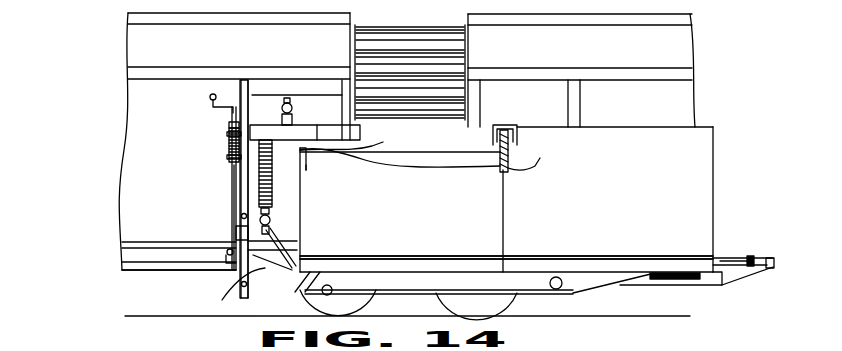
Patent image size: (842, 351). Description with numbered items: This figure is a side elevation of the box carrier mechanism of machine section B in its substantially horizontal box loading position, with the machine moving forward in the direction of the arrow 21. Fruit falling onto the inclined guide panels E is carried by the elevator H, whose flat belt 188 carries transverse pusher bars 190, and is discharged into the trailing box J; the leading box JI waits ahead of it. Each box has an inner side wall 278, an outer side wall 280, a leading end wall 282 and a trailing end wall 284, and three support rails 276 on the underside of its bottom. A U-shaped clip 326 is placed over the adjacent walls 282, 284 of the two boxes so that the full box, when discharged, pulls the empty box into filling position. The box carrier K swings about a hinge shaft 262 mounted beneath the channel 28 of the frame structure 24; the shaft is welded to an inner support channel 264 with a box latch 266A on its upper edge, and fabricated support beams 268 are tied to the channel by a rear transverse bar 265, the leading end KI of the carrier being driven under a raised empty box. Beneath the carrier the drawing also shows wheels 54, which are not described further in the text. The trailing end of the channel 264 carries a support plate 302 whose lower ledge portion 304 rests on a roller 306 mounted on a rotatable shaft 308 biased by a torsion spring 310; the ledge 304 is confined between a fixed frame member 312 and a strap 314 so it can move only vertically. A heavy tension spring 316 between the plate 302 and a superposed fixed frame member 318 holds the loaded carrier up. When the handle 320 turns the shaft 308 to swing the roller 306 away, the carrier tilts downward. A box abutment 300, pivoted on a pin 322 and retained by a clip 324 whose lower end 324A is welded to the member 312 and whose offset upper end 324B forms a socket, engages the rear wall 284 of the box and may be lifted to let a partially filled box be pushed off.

The machine section B is at (104, 51).
The inclined guide panels E is at (436, 70).
The elevator H is at (403, 72).
The flat belt 188 is at (360, 40).
The transverse pusher bars 190 is at (363, 72).
The superposed fixed frame member 318 is at (286, 93).
The handle 320 is at (209, 98).
The torsion spring 310 is at (232, 124).
The offset upper end 324B is at (234, 133).
The clip 324 is at (234, 140).
The lower end 324A is at (234, 148).
The rotatable shaft 308 is at (231, 178).
The fixed frame member 312 is at (238, 198).
The strap 314 is at (240, 232).
The roller 306 is at (226, 252).
The frame structure 24 is at (116, 247).
The longitudinal main channel member 28 is at (124, 261).
The box abutment 300 is at (324, 130).
The heavy tension spring 316 is at (273, 212).
The support plate 302 is at (270, 241).
The lower ledge portion 304 is at (253, 258).
The pin 322 is at (361, 137).
The inner side wall 278 is at (594, 142).
The leading end wall 282 is at (500, 157).
The U-shaped clip 326 is at (502, 125).
The trailing end wall 284 is at (306, 172).
The outer side wall 280 is at (471, 205).
The trailing box J is at (506, 210).
The leading box JI is at (615, 199).
The support rails 276 is at (470, 258).
The fabricated support beams 268 is at (419, 278).
The box carrier K is at (494, 275).
The leading end of box carrier KI is at (612, 282).
The rear transverse bar 265 is at (332, 289).
The hinge shaft 262 is at (558, 277).
The wheel 54 is at (317, 306).
The inner support channel 264 is at (240, 285).
The box latch 266A is at (792, 232).
The arrow (direction of forward movement) 21 is at (786, 93).